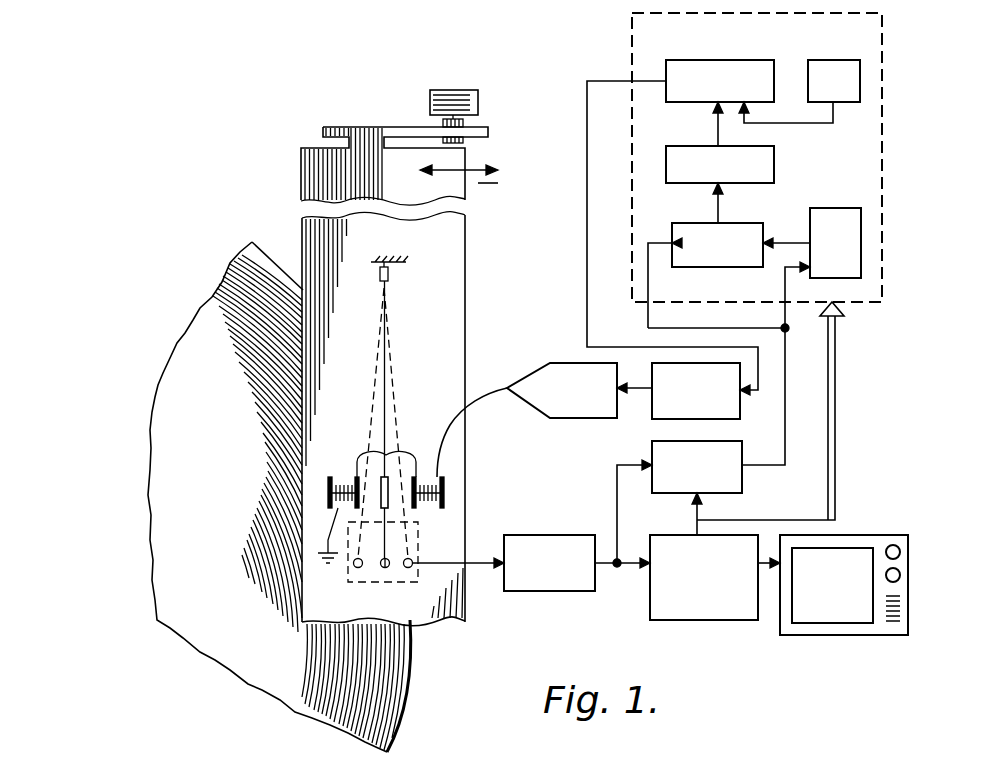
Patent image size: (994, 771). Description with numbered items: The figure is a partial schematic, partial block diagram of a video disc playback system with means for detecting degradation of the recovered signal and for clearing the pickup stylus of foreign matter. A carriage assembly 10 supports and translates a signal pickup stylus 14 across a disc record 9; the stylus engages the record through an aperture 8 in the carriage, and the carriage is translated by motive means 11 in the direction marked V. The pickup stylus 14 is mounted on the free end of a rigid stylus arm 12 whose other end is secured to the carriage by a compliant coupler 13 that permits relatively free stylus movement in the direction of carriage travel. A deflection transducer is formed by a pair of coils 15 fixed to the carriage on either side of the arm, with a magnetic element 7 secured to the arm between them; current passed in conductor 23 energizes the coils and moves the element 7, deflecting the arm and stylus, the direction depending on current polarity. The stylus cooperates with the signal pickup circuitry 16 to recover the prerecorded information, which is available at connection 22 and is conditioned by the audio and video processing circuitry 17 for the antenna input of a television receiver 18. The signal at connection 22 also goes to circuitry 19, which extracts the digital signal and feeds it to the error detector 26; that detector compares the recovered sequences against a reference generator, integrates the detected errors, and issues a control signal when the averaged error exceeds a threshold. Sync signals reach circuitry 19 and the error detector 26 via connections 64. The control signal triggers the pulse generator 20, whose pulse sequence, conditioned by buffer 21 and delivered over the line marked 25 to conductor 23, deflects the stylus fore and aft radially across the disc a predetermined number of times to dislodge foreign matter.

The magnetic element 7 is at (381, 478).
The aperture 8 is at (368, 583).
The disc record 9 is at (285, 697).
The carriage assembly 10 is at (303, 240).
The motive means 11 is at (451, 90).
The stylus arm 12 is at (382, 328).
The compliant coupler 13 is at (390, 278).
The pickup stylus 14 is at (386, 568).
The coils 15 is at (424, 508).
The signal pickup circuitry 16 is at (545, 591).
The audio and video processing circuitry 17 is at (680, 620).
The television receiver 18 is at (817, 635).
The digital extraction circuitry 19 is at (742, 474).
The pulse generator 20 is at (740, 402).
The buffer 21 is at (563, 363).
The connection 22 is at (618, 567).
The conductor 23 is at (485, 397).
The pulse line 25 is at (645, 390).
The error detector 26 is at (632, 31).
The connections 64 is at (837, 425).